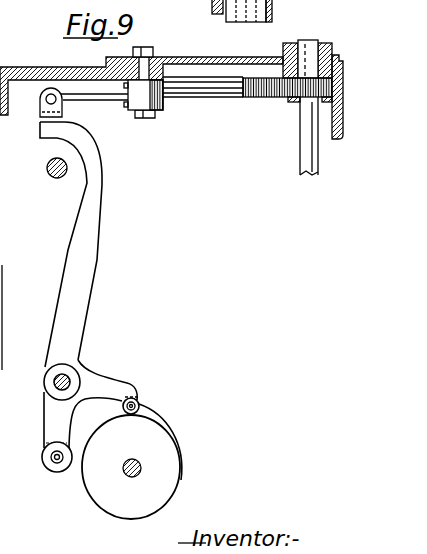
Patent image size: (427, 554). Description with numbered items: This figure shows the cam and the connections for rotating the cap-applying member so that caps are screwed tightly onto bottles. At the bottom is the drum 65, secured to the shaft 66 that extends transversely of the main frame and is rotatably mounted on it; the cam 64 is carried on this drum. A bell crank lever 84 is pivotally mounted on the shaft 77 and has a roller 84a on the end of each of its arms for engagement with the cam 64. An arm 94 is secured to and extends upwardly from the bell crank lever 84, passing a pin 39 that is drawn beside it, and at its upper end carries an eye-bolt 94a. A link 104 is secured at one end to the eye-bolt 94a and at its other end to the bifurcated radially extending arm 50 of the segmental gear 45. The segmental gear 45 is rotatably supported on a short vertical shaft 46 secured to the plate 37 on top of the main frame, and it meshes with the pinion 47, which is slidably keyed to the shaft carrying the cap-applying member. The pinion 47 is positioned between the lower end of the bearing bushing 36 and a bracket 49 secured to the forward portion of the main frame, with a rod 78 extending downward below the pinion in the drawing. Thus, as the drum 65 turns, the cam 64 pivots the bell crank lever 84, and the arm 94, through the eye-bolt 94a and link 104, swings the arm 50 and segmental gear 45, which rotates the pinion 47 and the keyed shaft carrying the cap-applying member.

The bearing bushing 36 is at (327, 43).
The plate 37 is at (206, 58).
The pin 39 is at (53, 178).
The segmental gear 45 is at (200, 96).
The short vertical shaft 46 is at (145, 62).
The pinion 47 is at (290, 88).
The bracket 49 is at (330, 117).
The bifurcated radially extending arm 50 is at (126, 87).
The rod 78 is at (306, 153).
The link 104 is at (92, 98).
The eye-bolt 94a is at (52, 87).
The arm 94 is at (100, 187).
The shaft 77 is at (58, 388).
The bell crank lever 84 is at (99, 396).
The roller 84a is at (142, 410).
The cam 64 is at (175, 424).
The drum 65 is at (102, 497).
The shaft 66 is at (142, 472).